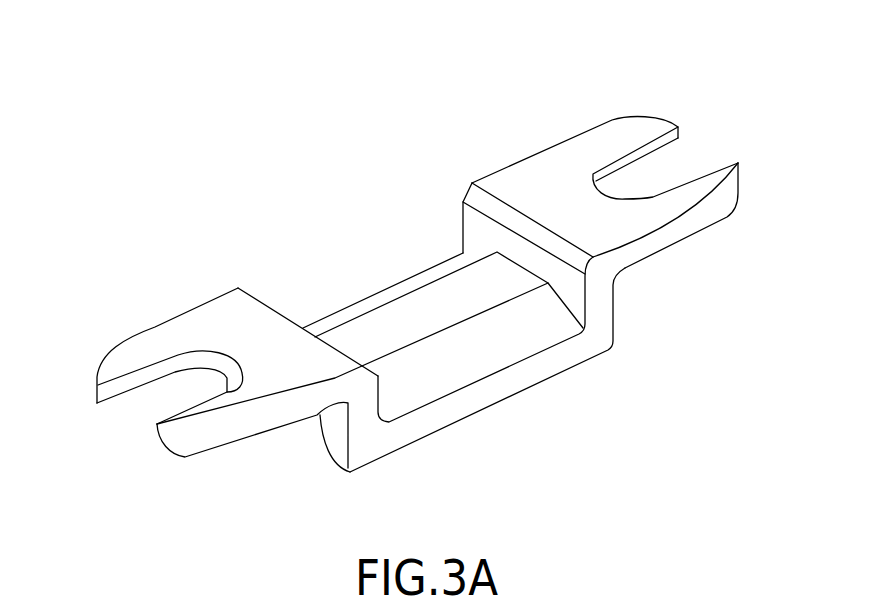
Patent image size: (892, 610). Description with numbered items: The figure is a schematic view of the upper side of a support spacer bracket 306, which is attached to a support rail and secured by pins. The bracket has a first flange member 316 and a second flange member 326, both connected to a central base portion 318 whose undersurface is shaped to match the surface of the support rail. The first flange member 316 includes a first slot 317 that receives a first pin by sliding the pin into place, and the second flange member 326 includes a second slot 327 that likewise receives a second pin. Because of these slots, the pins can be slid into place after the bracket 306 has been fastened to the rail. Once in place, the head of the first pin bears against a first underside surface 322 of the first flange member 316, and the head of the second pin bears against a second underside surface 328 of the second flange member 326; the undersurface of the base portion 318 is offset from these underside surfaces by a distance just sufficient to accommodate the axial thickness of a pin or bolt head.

The support spacer bracket 306 is at (250, 183).
The first flange member 316 is at (142, 340).
The first slot 317 is at (112, 413).
The base portion 318 is at (500, 392).
The first underside surface 322 is at (250, 441).
The second flange member 326 is at (593, 141).
The second slot 327 is at (694, 146).
The second underside surface 328 is at (667, 251).